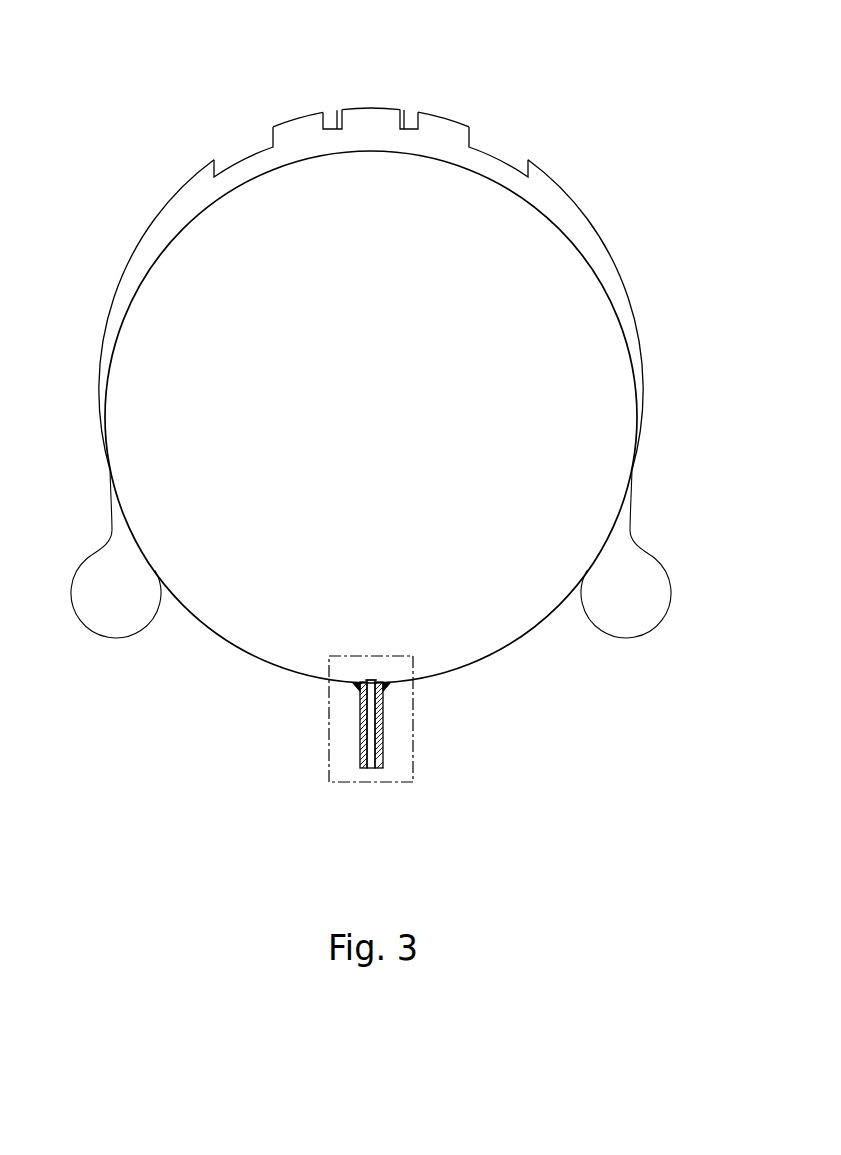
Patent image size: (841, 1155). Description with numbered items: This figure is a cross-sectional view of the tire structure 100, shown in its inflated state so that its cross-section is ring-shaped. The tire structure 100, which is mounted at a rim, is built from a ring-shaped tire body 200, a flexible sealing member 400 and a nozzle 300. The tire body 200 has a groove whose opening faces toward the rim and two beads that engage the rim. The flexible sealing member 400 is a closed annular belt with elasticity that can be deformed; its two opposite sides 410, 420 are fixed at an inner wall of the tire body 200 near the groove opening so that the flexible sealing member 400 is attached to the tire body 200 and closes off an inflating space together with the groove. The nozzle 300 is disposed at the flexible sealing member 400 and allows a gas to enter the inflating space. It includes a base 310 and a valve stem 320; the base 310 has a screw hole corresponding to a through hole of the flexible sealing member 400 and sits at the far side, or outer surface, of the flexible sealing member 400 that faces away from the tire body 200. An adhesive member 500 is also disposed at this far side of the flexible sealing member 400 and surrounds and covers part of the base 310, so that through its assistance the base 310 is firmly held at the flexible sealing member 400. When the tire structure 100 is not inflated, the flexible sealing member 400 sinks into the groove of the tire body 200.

The tire structure 100 is at (130, 32).
The tire body 200 is at (567, 212).
The nozzle 300 is at (230, 713).
The base 310 is at (361, 689).
The valve stem 320 is at (366, 754).
The flexible sealing member 400 is at (497, 653).
The first side of flexible sealing member 410 is at (107, 405).
The second side of flexible sealing member 420 is at (638, 410).
The adhesive member 500 is at (385, 687).